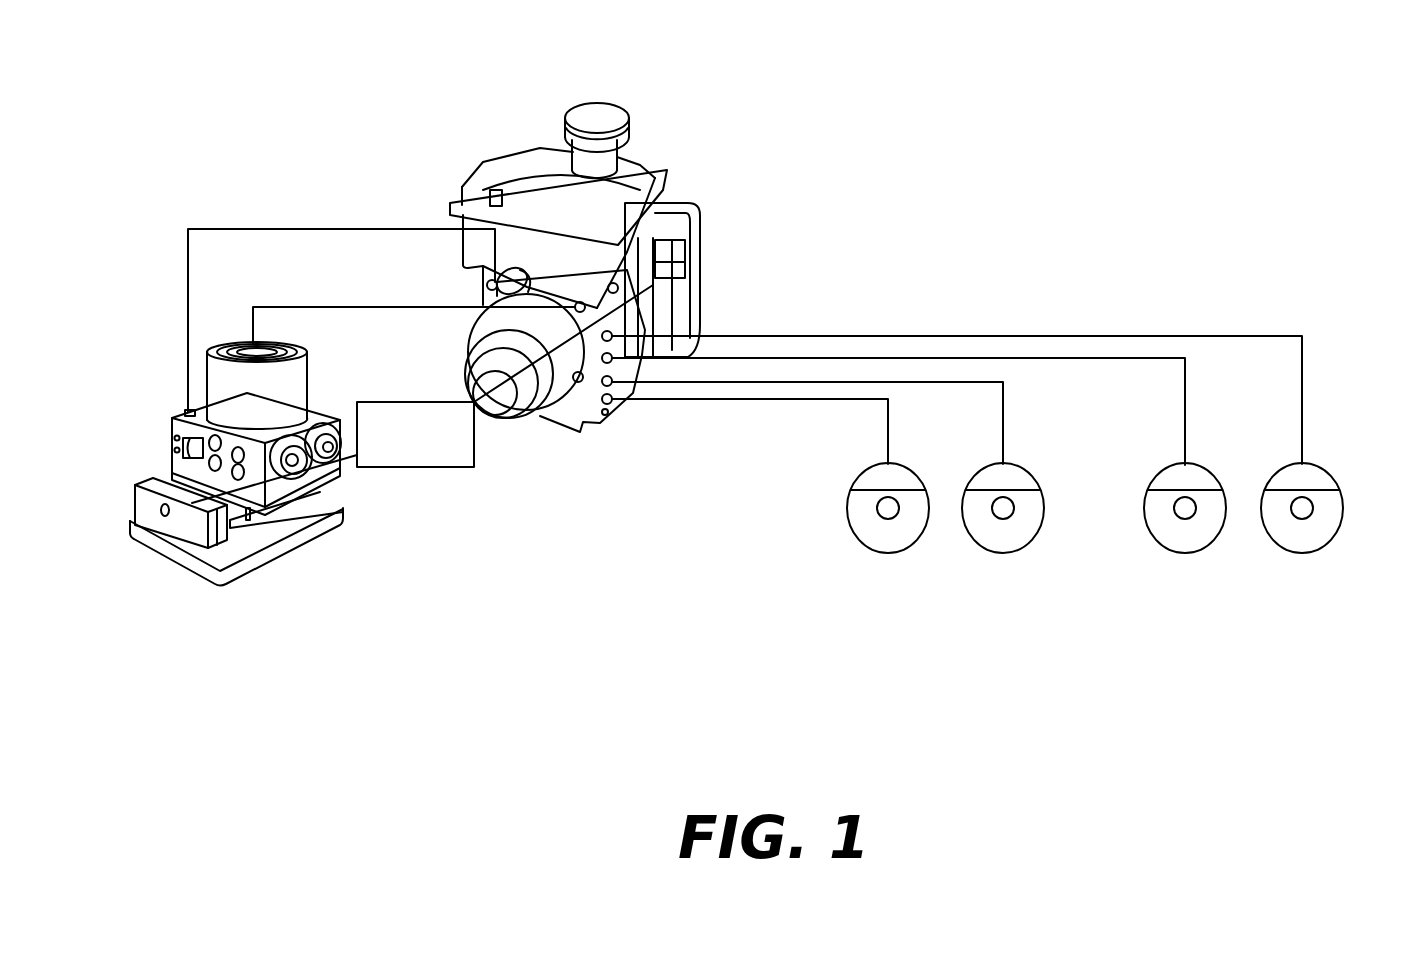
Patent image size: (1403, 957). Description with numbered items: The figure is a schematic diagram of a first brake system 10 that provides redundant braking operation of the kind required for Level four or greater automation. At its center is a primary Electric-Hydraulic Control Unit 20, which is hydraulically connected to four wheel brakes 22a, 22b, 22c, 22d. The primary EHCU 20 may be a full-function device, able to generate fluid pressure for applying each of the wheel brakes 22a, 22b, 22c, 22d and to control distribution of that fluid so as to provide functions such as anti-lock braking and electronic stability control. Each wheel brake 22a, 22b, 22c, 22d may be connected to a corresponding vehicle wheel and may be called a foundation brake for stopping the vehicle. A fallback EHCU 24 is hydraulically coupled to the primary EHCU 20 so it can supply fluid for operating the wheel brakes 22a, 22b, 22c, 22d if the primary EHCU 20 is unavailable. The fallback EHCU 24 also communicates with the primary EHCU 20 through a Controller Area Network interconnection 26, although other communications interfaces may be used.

The first brake system 10 is at (276, 119).
The primary Electric-Hydraulic Control Unit (EHCU) 20 is at (524, 151).
The wheel brake 22a is at (915, 474).
The wheel brake 22b is at (1033, 474).
The wheel brake 22c is at (1215, 474).
The wheel brake 22d is at (1332, 474).
The fallback EHCU 24 is at (168, 407).
The Controller Area Network (CAN) interconnection 26 is at (372, 402).